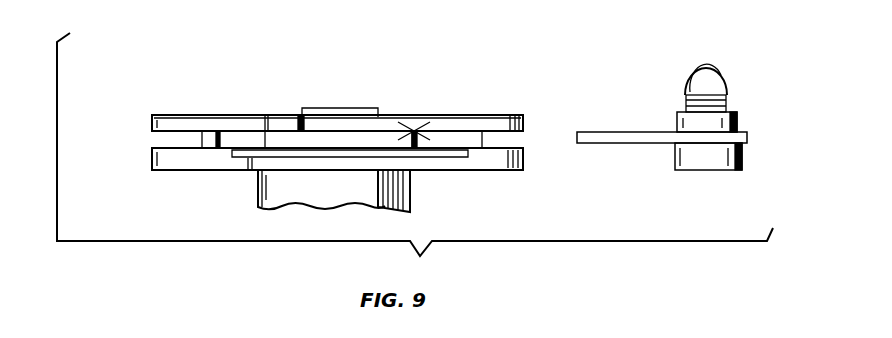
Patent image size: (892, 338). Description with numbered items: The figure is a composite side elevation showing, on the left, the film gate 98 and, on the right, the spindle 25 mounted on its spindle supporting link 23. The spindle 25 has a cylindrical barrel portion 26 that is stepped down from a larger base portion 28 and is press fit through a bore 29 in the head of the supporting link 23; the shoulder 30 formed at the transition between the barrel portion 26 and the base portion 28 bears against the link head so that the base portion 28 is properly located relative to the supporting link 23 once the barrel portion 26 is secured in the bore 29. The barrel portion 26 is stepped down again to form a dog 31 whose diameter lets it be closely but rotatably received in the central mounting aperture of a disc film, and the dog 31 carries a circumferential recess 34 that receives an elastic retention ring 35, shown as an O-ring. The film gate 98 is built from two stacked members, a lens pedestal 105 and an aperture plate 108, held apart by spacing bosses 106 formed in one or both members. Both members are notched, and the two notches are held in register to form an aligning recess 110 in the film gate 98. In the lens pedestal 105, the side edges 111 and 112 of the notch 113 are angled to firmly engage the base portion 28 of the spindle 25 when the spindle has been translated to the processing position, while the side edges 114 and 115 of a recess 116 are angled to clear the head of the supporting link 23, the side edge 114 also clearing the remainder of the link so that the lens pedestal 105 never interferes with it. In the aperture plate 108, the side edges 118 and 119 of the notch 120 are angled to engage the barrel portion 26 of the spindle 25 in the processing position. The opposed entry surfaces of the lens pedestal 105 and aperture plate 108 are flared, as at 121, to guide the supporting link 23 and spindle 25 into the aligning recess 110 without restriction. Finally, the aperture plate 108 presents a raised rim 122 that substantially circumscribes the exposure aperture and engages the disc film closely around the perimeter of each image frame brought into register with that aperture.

The spindle 25 is at (740, 68).
The spindle supporting link 23 is at (590, 132).
The cylindrical barrel portion 26 is at (740, 122).
The base portion 28 is at (742, 160).
The bore 29 is at (672, 158).
The shoulder 30 is at (716, 138).
The dog 31 is at (705, 70).
The circumferential recess 34 is at (726, 93).
The elastic retention ring 35 is at (688, 100).
The film gate 98 is at (196, 172).
The lens pedestal 105 is at (152, 154).
The spacing bosses 106 is at (233, 128).
The aperture plate 108 is at (152, 118).
The aligning recess 110 is at (354, 110).
The side edge of notch 111 is at (290, 172).
The side edge of notch 112 is at (385, 185).
The notch 113 is at (350, 172).
The side edge of recess 114 is at (245, 172).
The side edge of recess 115 is at (406, 170).
The recess 116 is at (334, 168).
The side edge of notch 118 is at (306, 115).
The side edge of notch 119 is at (373, 125).
The notch 120 is at (326, 125).
The flared entry surfaces 121 is at (418, 130).
The raised rim 122 is at (350, 128).